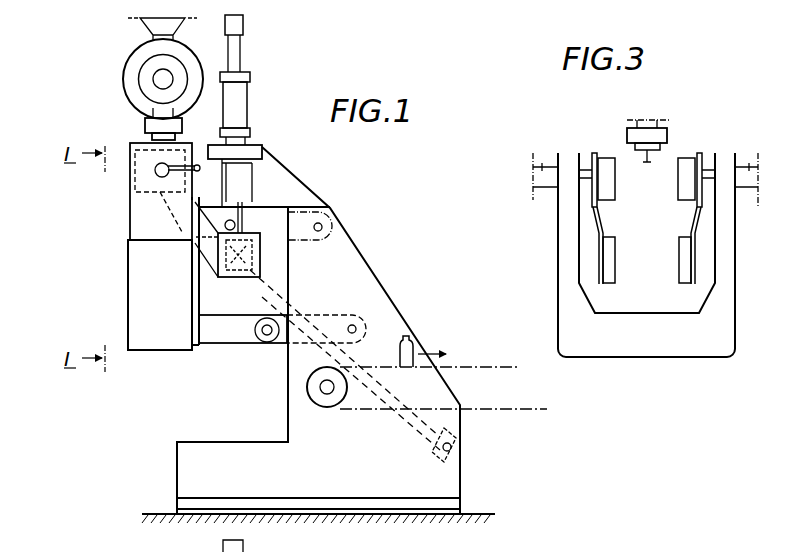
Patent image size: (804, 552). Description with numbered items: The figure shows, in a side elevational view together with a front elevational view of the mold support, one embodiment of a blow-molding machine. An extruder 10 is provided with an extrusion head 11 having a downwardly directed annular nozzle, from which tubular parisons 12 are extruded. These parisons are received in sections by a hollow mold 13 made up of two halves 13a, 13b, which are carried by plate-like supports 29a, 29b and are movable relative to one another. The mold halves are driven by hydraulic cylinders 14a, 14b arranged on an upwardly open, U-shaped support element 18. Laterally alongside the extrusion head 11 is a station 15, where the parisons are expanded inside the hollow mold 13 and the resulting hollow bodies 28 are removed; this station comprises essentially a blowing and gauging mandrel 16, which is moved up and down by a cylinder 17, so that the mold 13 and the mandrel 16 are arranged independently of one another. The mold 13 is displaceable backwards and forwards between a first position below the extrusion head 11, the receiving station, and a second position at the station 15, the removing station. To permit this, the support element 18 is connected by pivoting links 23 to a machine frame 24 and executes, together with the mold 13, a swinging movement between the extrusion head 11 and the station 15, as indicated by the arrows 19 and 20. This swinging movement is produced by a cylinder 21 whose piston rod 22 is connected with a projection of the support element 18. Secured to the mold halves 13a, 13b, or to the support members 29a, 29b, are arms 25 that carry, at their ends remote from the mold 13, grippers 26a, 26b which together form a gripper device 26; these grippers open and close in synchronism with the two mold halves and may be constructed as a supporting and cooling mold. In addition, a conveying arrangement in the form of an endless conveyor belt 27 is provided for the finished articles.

In FIG. 1, the extruder 10 is at (134, 60).
In FIG. 1, the extrusion head 11 is at (146, 124).
In FIG. 3, the extrusion head 11 is at (669, 128).
In FIG. 1, the tubular parison 12 is at (178, 137).
In FIG. 3, the tubular parison 12 is at (649, 166).
In FIG. 1, the hollow mold 13 is at (123, 157).
In FIG. 1, the mold half 13a is at (128, 188).
In FIG. 3, the mold half 13a is at (617, 172).
In FIG. 3, the mold half 13b is at (682, 172).
In FIG. 1, the hydraulic cylinder 14a is at (156, 172).
In FIG. 3, the hydraulic cylinder 14a is at (543, 162).
In FIG. 3, the hydraulic cylinder 14b is at (750, 162).
In FIG. 1, the station 15 is at (263, 94).
In FIG. 1, the blowing and gauging mandrel 16 is at (260, 204).
In FIG. 1, the cylinder 17 is at (250, 110).
In FIG. 1, the support element 18 is at (128, 320).
In FIG. 3, the support element 18 is at (722, 318).
In FIG. 1, the arrow 19 is at (165, 328).
In FIG. 1, the arrow 20 is at (227, 369).
In FIG. 1, the cylinder 21 is at (402, 428).
In FIG. 1, the piston rod 22 is at (284, 299).
In FIG. 1, the pivoting link 23 is at (337, 313).
In FIG. 1, the machine frame 24 is at (403, 312).
In FIG. 1, the arm 25 is at (173, 236).
In FIG. 3, the arm 25 is at (597, 233).
In FIG. 1, the gripper device 26 is at (270, 267).
In FIG. 3, the gripper 26a is at (614, 260).
In FIG. 3, the gripper 26b is at (679, 250).
In FIG. 1, the endless conveyor belt 27 is at (505, 366).
In FIG. 1, the hollow body 28 is at (330, 239).
In FIG. 3, the plate-like support 29a is at (596, 156).
In FIG. 3, the plate-like support 29b is at (703, 148).